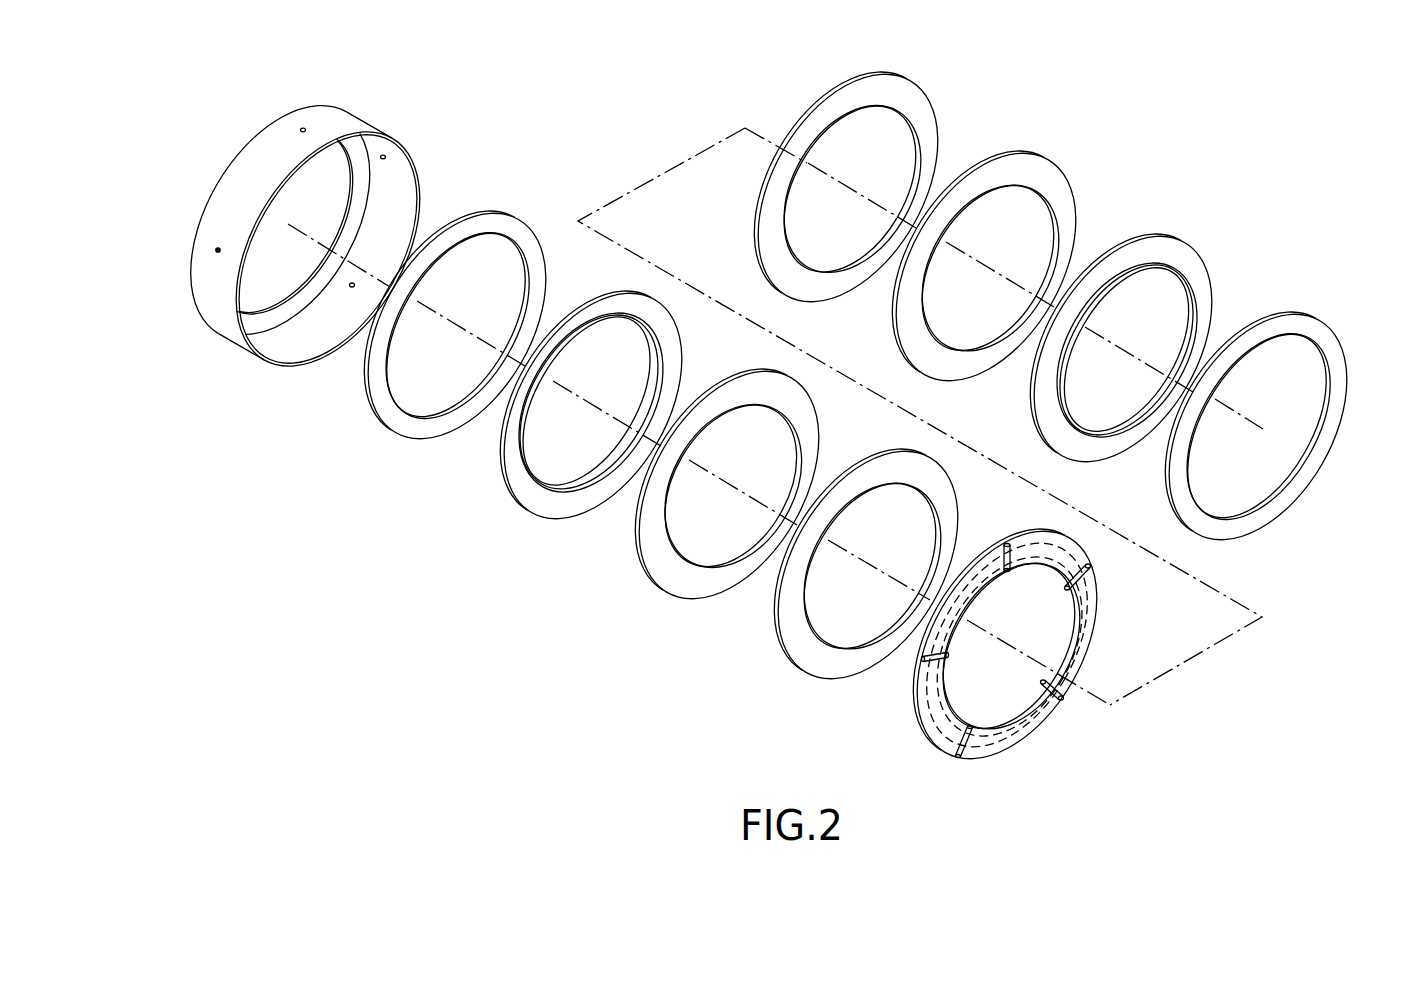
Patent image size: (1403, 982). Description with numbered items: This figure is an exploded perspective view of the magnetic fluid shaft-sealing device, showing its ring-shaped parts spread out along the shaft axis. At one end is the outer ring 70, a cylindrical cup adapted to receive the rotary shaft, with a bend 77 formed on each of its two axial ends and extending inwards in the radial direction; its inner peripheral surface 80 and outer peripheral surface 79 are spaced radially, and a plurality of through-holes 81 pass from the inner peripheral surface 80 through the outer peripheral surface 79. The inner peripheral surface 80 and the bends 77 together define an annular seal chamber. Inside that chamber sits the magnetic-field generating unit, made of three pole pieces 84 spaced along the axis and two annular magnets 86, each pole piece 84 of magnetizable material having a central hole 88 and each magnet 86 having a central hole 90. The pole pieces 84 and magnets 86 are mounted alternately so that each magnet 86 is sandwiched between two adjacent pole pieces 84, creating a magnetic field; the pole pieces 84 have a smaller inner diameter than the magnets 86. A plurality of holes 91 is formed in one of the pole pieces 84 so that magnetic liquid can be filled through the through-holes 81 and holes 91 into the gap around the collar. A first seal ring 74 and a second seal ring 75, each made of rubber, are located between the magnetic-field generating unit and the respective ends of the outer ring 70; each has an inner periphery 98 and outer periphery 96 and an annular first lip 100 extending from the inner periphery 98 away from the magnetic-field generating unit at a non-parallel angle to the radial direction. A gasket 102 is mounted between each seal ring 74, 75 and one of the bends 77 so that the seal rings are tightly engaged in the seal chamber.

The outer ring 70 is at (310, 231).
The first seal ring 74 is at (570, 500).
The second seal ring 75 is at (1146, 316).
The bend 77 is at (309, 238).
The outer peripheral surface 79 is at (272, 217).
The inner peripheral surface 80 is at (328, 249).
The through-hole 81 is at (216, 250).
The pole piece 84 is at (670, 565).
The magnet 86 is at (798, 637).
The central hole 88 is at (1030, 210).
The central hole 90 is at (885, 138).
The hole 91 is at (923, 660).
The outer periphery 96 is at (1142, 238).
The inner periphery 98 is at (537, 487).
The first lip 100 is at (1177, 267).
The gasket 102 is at (410, 425).